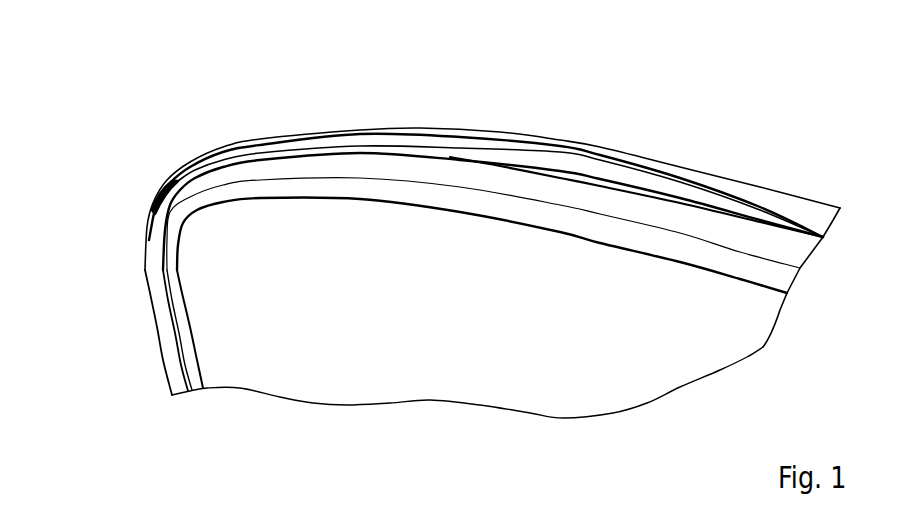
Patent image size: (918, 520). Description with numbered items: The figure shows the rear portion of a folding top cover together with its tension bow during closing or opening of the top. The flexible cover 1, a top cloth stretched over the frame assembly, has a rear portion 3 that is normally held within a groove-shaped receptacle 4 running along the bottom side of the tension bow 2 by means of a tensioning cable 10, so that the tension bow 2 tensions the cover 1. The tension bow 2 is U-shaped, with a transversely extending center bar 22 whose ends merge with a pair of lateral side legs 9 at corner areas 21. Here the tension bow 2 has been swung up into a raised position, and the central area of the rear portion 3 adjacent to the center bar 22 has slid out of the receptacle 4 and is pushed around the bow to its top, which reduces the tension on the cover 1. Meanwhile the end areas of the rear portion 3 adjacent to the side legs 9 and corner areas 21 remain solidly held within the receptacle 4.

The cover 1 is at (702, 178).
The tension bow 2 is at (612, 232).
The rear portion 3 is at (418, 132).
The receptacle 4 is at (496, 152).
The side legs 9 is at (163, 310).
The tensioning cable 10 is at (327, 152).
The corner areas 21 is at (150, 157).
The center bar 22 is at (476, 243).